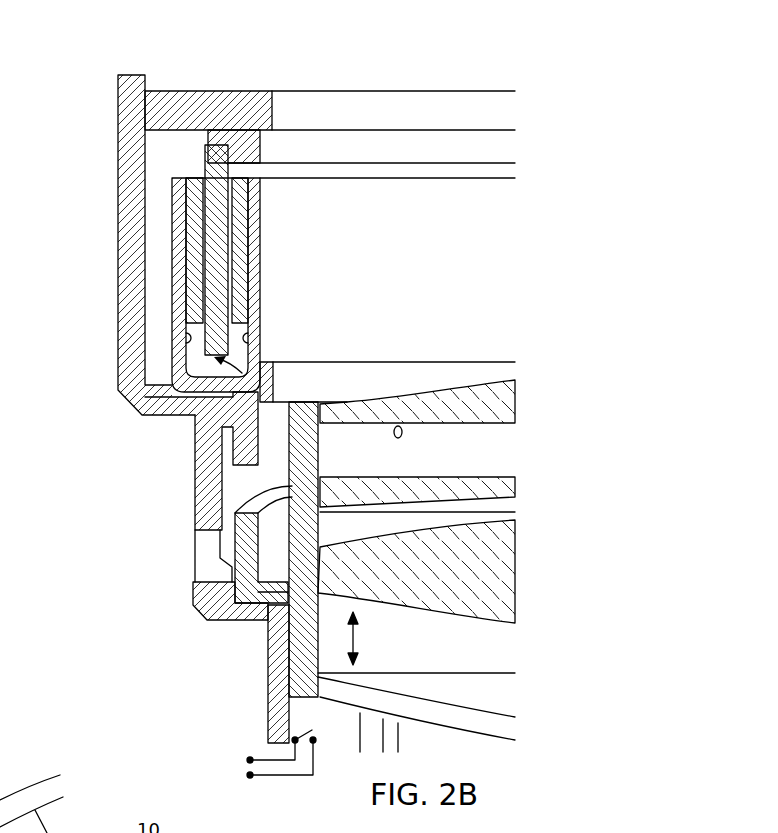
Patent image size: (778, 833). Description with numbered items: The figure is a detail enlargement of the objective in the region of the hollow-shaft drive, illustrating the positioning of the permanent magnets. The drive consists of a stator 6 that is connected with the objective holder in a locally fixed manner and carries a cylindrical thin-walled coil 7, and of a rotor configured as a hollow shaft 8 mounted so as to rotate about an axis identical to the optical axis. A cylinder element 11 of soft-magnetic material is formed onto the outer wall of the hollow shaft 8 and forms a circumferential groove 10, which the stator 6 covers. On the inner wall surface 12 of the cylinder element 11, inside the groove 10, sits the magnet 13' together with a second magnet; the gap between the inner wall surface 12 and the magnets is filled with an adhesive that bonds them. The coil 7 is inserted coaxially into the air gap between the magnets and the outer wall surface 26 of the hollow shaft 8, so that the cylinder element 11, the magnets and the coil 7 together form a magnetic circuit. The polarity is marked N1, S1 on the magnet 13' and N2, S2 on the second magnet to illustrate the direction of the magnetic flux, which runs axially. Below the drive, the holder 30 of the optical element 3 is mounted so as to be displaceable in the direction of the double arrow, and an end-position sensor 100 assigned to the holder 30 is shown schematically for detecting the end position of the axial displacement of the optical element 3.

The stator 6 is at (258, 149).
The coil 7 is at (118, 388).
The cylinder element 11 is at (167, 402).
The hollow shaft 8 is at (268, 277).
The magnet 13' is at (116, 250).
The north pole of magnet 13' N1 is at (195, 250).
The south pole of magnet 13' S1 is at (195, 298).
The north pole of magnet 13" N2 is at (250, 250).
The south pole of magnet 13" S2 is at (250, 298).
The inner wall surface 12 is at (183, 345).
The outer wall surface 26 is at (252, 345).
The circumferential groove 10 is at (275, 382).
The optical element 3 is at (471, 636).
The holder 30 is at (303, 648).
The end-position sensor 100 is at (261, 755).